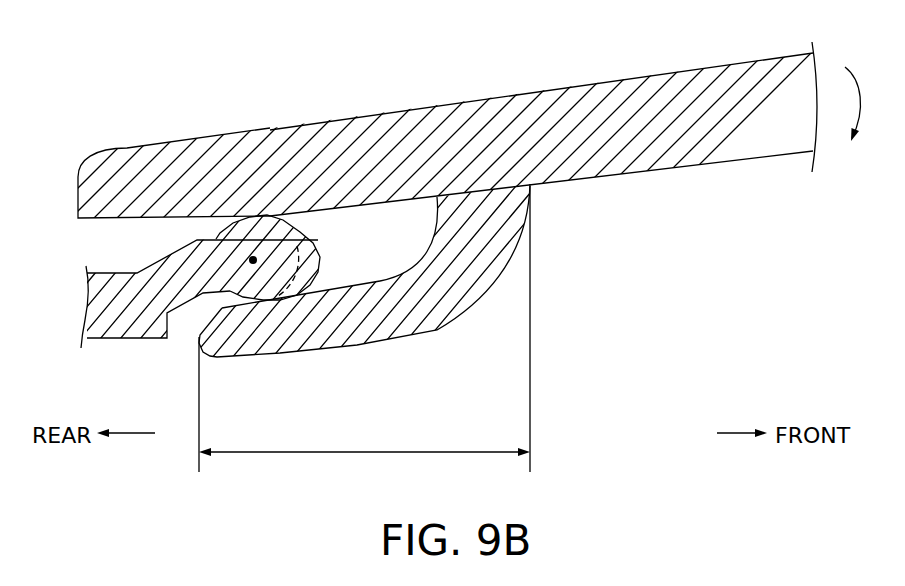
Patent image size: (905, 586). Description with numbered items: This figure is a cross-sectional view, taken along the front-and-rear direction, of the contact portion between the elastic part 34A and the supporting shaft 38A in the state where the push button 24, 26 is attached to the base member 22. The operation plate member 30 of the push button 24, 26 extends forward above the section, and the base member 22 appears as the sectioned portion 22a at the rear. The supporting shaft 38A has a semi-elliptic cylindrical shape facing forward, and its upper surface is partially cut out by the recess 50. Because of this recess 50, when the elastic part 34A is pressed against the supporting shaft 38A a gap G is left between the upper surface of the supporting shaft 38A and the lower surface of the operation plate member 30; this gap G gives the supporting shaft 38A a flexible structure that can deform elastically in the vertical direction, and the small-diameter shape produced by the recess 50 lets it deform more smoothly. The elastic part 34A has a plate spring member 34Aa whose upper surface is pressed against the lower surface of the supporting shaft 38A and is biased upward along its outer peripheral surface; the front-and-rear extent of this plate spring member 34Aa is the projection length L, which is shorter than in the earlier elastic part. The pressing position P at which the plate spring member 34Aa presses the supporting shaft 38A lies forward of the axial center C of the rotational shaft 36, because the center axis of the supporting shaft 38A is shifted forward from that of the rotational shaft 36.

The operation plate member 30 is at (572, 110).
The push button 24 is at (174, 145).
The push button 26 is at (153, 140).
The rotational shaft 36 is at (292, 213).
The gap G is at (300, 228).
The base member portion 22a is at (211, 303).
The base member 22 is at (124, 318).
The recess 50 is at (247, 217).
The axial center C is at (254, 256).
The supporting shaft 38A is at (324, 254).
The pressing position P is at (256, 265).
The elastic part 34A is at (443, 333).
The plate spring member 34Aa is at (362, 328).
The projection length L is at (364, 332).